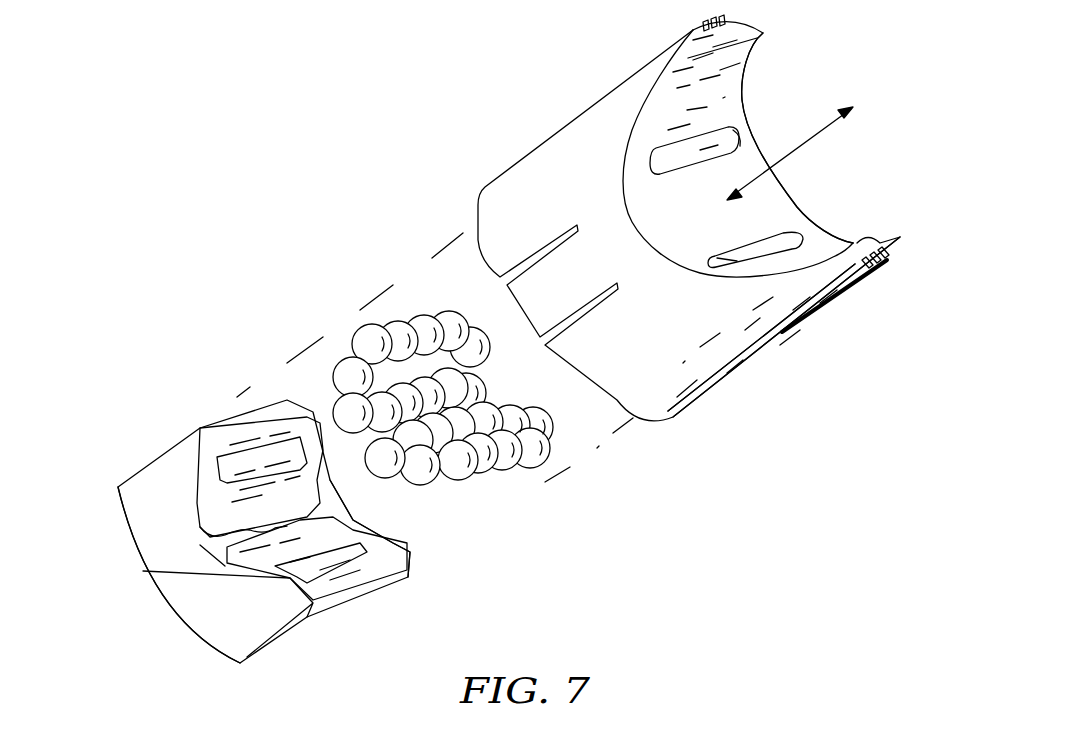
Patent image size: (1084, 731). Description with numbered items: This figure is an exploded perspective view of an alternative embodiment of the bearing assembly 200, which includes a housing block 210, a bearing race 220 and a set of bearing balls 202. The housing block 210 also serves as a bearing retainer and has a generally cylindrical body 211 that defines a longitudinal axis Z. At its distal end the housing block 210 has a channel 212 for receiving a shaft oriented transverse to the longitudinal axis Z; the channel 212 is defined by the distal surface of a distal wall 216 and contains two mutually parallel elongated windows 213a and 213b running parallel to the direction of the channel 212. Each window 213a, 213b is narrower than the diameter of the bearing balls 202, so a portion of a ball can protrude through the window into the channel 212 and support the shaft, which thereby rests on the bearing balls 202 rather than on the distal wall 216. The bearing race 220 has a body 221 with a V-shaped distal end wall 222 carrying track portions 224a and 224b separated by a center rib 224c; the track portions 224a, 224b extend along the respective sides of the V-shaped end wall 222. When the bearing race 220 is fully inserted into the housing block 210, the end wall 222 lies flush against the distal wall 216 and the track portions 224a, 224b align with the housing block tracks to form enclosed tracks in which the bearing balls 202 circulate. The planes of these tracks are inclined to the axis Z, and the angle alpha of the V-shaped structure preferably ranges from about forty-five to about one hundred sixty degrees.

The bearing assembly 200 is at (316, 257).
The bearing balls 202 is at (367, 340).
The housing block 210 is at (652, 410).
The cylindrical body 211 is at (753, 347).
The channel 212 is at (822, 209).
The elongated window 213a is at (650, 165).
The elongated window 213b is at (712, 264).
The distal wall 216 is at (890, 250).
The bearing race 220 is at (120, 461).
The body 221 is at (137, 517).
The V-shaped distal end wall 222 is at (413, 553).
The track portion 224a is at (220, 422).
The track portion 224b is at (350, 573).
The center rib 224c is at (280, 540).
The longitudinal axis Z is at (820, 137).
The angle of the V-shaped structure alpha is at (333, 464).